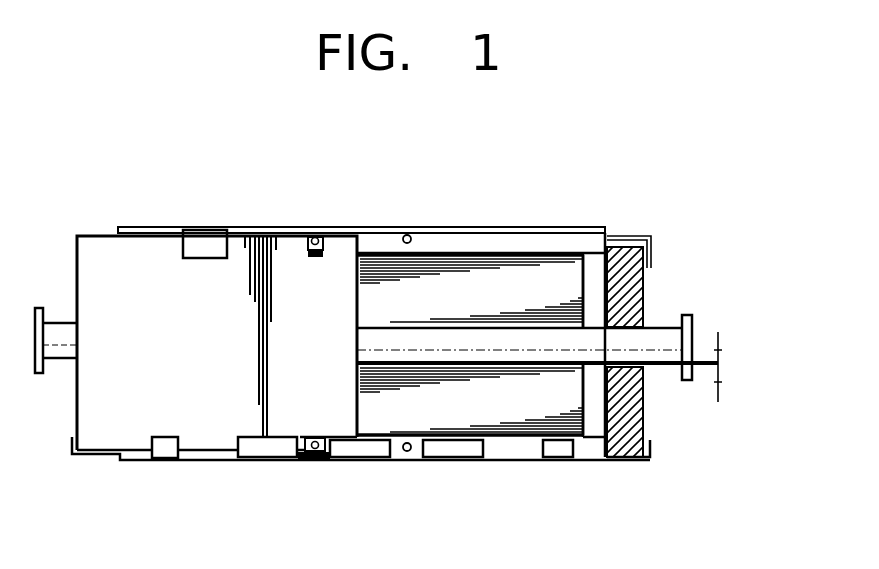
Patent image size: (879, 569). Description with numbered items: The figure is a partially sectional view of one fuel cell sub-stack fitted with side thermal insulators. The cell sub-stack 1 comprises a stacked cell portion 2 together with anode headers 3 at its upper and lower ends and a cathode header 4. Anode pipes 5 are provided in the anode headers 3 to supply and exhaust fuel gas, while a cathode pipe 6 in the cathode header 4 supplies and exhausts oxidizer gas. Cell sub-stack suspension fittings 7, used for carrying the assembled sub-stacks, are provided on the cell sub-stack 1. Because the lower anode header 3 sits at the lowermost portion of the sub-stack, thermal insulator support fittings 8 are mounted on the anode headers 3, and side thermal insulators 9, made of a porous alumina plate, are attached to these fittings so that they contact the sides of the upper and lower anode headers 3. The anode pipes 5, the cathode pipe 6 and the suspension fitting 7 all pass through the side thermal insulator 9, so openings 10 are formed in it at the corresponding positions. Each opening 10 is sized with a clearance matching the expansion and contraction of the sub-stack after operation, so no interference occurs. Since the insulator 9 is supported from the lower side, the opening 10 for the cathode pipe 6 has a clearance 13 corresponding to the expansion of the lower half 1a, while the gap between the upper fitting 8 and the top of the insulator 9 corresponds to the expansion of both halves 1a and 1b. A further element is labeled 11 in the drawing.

The cell sub-stack 1 is at (198, 186).
The lower half of the sub-stack portion 1a is at (505, 417).
The upper half of the sub-stack portion 1b is at (480, 268).
The stacked cell portion 2 is at (522, 277).
The anode header 3 is at (592, 458).
The cathode header 4 is at (552, 335).
The anode pipe 5 is at (407, 234).
The cathode pipe 6 is at (57, 322).
The cell sub-stack suspension fitting 7 is at (407, 452).
The thermal insulator support fitting 8 is at (208, 258).
The side thermal insulator 9 is at (100, 432).
The opening 10 is at (630, 323).
The partition member 11 is at (248, 227).
The clearance 13 is at (718, 365).